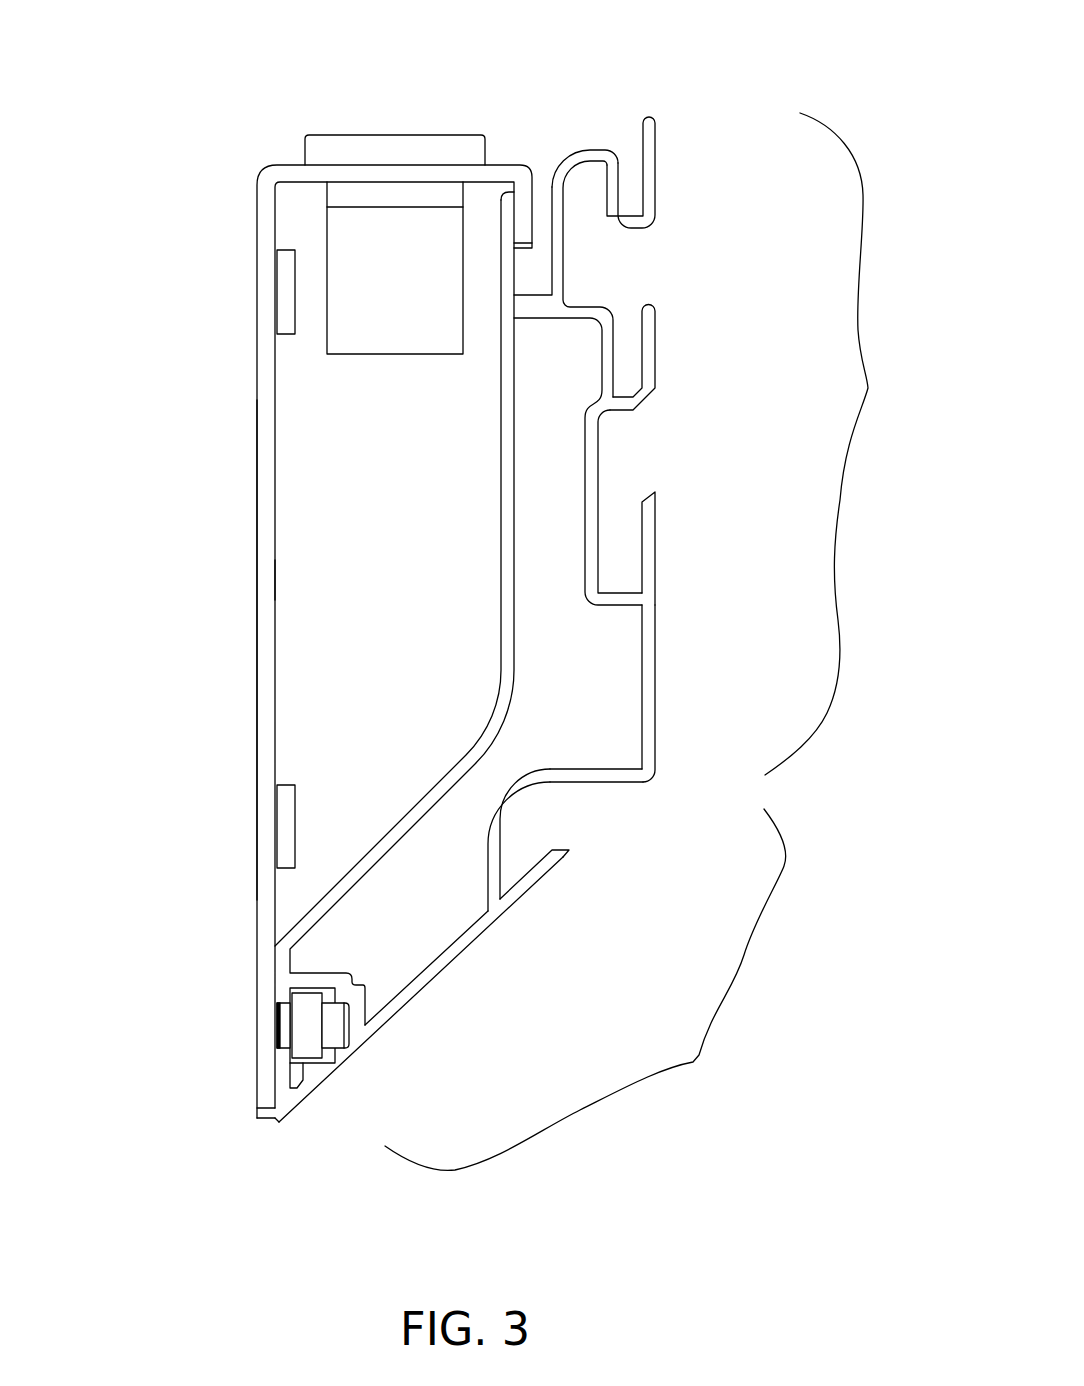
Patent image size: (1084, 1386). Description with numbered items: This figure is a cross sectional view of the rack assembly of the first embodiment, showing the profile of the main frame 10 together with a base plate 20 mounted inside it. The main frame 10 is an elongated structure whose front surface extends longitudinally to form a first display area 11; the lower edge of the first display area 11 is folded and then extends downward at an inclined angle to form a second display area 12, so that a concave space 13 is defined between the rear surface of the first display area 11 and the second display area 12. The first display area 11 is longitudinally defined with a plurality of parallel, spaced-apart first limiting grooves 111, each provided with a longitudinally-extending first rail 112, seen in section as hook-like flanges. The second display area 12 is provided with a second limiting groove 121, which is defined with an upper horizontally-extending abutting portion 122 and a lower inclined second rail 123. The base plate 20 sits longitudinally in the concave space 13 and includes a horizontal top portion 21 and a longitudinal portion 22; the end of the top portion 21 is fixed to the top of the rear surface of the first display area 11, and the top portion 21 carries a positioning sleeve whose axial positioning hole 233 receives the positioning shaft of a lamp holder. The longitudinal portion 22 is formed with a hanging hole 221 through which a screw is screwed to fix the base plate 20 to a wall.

The main frame 10 is at (647, 79).
The first display area 11 is at (710, 420).
The first limiting groove 111 is at (610, 279).
The first rail 112 is at (652, 168).
The second display area 12 is at (530, 969).
The second limiting groove 121 is at (545, 818).
The abutting portion 122 is at (582, 773).
The second rail 123 is at (552, 860).
The concave space 13 is at (413, 507).
The base plate 20 is at (213, 167).
The top portion 21 is at (282, 173).
The longitudinal portion 22 is at (267, 690).
The hanging hole 221 is at (283, 263).
The positioning hole 233 is at (403, 137).